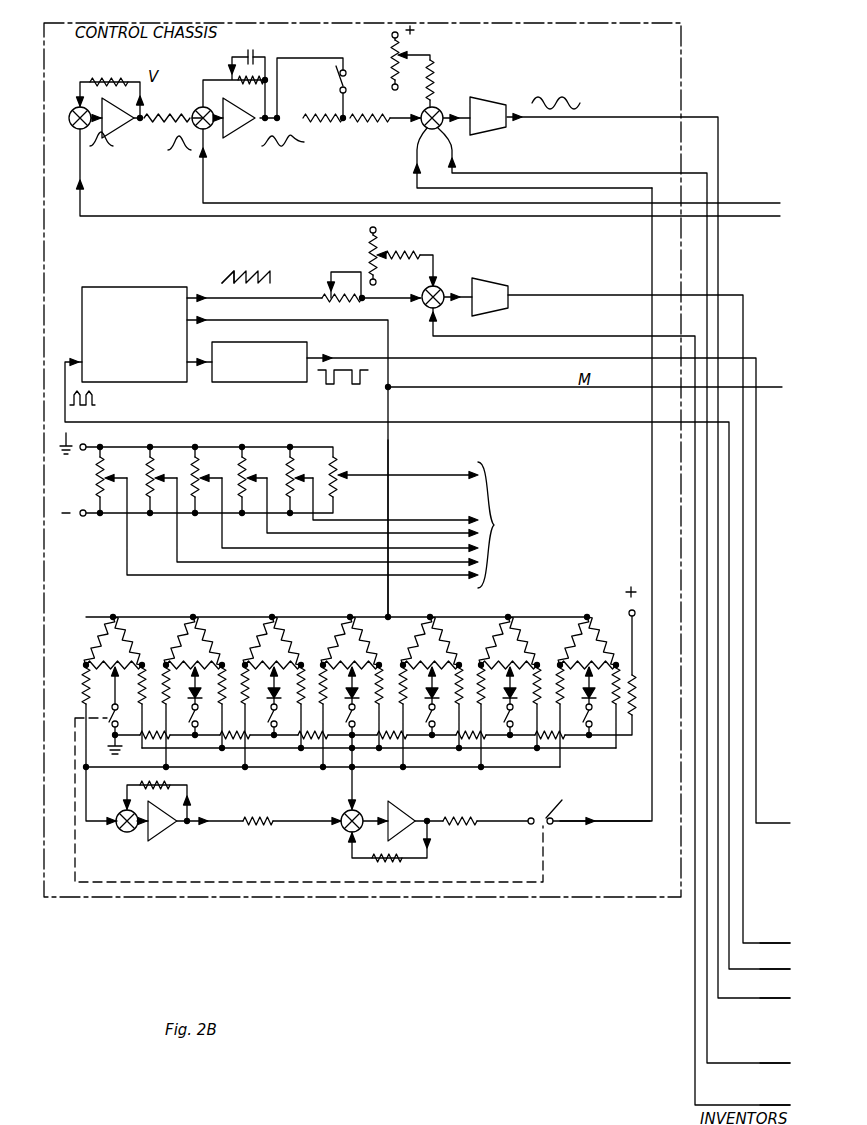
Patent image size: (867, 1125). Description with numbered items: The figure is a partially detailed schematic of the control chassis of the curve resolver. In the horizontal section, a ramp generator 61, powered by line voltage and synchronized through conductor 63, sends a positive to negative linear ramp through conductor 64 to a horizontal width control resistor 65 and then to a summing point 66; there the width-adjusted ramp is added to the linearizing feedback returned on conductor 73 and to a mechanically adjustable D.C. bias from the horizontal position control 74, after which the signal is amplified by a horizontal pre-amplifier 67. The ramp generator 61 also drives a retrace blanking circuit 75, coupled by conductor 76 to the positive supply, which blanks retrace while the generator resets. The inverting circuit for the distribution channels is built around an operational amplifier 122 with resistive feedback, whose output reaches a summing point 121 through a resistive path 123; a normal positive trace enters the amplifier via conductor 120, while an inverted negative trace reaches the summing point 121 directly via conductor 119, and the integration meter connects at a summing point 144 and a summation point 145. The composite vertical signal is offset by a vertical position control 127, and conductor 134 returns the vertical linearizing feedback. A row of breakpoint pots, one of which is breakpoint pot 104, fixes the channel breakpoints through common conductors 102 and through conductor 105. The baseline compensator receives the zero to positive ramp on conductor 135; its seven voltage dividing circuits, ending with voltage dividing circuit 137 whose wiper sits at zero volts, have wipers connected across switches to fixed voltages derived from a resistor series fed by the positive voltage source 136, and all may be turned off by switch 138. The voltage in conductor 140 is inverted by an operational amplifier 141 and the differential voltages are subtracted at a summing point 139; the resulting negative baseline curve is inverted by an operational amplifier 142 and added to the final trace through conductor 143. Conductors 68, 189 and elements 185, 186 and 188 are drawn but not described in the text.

The operational amplifier 122 is at (125, 95).
The resistive path 123 is at (155, 112).
The summing point 121 is at (188, 122).
The summation point 145 is at (136, 122).
The summing point 144 is at (280, 128).
The switch 185 is at (307, 62).
The vertical position control 127 is at (412, 54).
The multiplier 186 is at (421, 123).
The amplifier 188 is at (485, 102).
The conductor 119 is at (507, 168).
The conductor 120 is at (446, 176).
The ramp generator 61 is at (134, 334).
The conductor 64 is at (208, 292).
The horizontal width control resistor 65 is at (340, 276).
The horizontal position control 74 is at (388, 258).
The summing point 66 is at (441, 288).
The horizontal pre-amplifier 67 is at (503, 290).
The retrace blanking circuit 75 is at (259, 362).
The conductor 76 is at (559, 594).
The output line 68 is at (786, 944).
The conductor 63 is at (786, 970).
The output line 189 is at (789, 999).
The conductor 134 is at (789, 1064).
The conductor 73 is at (786, 1106).
The conductor 135 is at (391, 447).
The breakpoint pot 104 is at (96, 479).
The conductors 102 is at (328, 525).
The conductor 105 is at (127, 553).
The voltage dividing circuit 137 is at (108, 643).
The conductor 140 is at (230, 768).
The positive voltage source 136 is at (628, 611).
The operational amplifier 141 is at (178, 808).
The summing point 139 is at (345, 829).
The operational amplifier 142 is at (408, 833).
The switch 138 is at (558, 803).
The conductor 143 is at (610, 826).